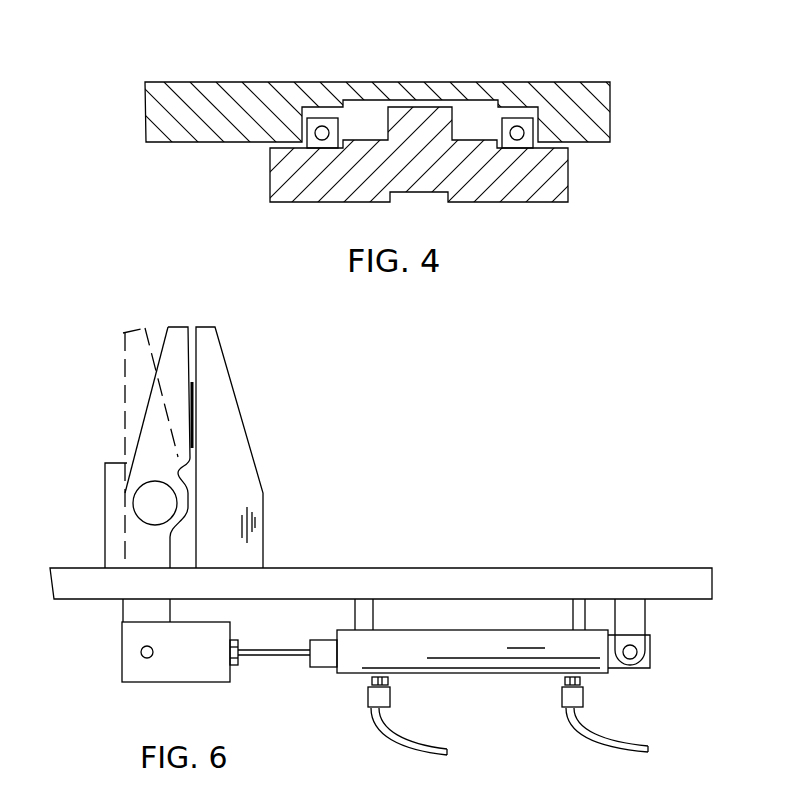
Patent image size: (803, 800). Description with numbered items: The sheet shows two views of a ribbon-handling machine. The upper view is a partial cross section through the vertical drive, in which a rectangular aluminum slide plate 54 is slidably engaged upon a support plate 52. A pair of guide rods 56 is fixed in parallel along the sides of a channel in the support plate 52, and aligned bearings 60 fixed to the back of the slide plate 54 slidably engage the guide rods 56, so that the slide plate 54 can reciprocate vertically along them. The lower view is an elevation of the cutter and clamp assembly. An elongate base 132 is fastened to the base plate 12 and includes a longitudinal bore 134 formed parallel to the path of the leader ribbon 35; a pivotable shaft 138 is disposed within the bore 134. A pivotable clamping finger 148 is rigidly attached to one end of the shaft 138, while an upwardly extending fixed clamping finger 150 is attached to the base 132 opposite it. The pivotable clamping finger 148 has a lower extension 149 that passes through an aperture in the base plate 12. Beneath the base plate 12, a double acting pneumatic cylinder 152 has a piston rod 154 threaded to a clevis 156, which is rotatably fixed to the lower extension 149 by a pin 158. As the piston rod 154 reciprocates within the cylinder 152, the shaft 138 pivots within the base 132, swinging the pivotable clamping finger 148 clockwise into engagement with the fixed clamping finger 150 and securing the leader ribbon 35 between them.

In FIG. 6, the base plate 12 is at (703, 577).
In FIG. 6, the leader ribbon 35 is at (195, 422).
In FIG. 4, the support plate 52 is at (607, 93).
In FIG. 4, the slide plate 54 is at (563, 190).
In FIG. 4, the guide rods 56 is at (300, 105).
In FIG. 4, the aligned bearings 60 is at (330, 122).
In FIG. 6, the elongate base 132 is at (113, 528).
In FIG. 6, the longitudinal bore 134 is at (133, 493).
In FIG. 6, the pivotable shaft 138 is at (172, 502).
In FIG. 6, the pivotable clamping finger 148 is at (155, 423).
In FIG. 6, the lower extension 149 is at (137, 610).
In FIG. 6, the fixed clamping finger 150 is at (240, 445).
In FIG. 6, the double acting pneumatic cylinder 152 is at (442, 652).
In FIG. 6, the piston rod 154 is at (258, 657).
In FIG. 6, the clevis 156 is at (178, 672).
In FIG. 6, the pin 158 is at (143, 656).